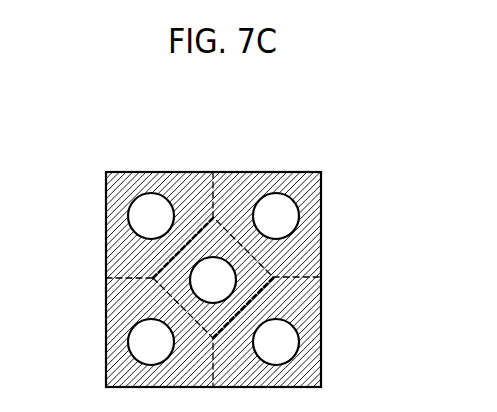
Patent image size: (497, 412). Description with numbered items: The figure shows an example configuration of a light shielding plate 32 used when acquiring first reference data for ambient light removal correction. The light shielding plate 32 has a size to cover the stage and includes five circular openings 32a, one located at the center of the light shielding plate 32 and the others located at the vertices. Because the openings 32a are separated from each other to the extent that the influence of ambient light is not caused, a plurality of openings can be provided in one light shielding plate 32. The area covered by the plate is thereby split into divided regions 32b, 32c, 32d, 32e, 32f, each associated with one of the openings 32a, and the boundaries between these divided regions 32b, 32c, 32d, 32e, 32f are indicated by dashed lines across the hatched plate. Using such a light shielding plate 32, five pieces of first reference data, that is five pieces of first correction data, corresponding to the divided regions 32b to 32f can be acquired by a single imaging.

The light shielding plate 32 is at (301, 172).
The circular openings 32a is at (292, 218).
The divided region 32b is at (317, 255).
The divided region 32c is at (318, 376).
The divided region 32d is at (111, 373).
The divided region 32e is at (111, 254).
The divided region 32f is at (264, 284).